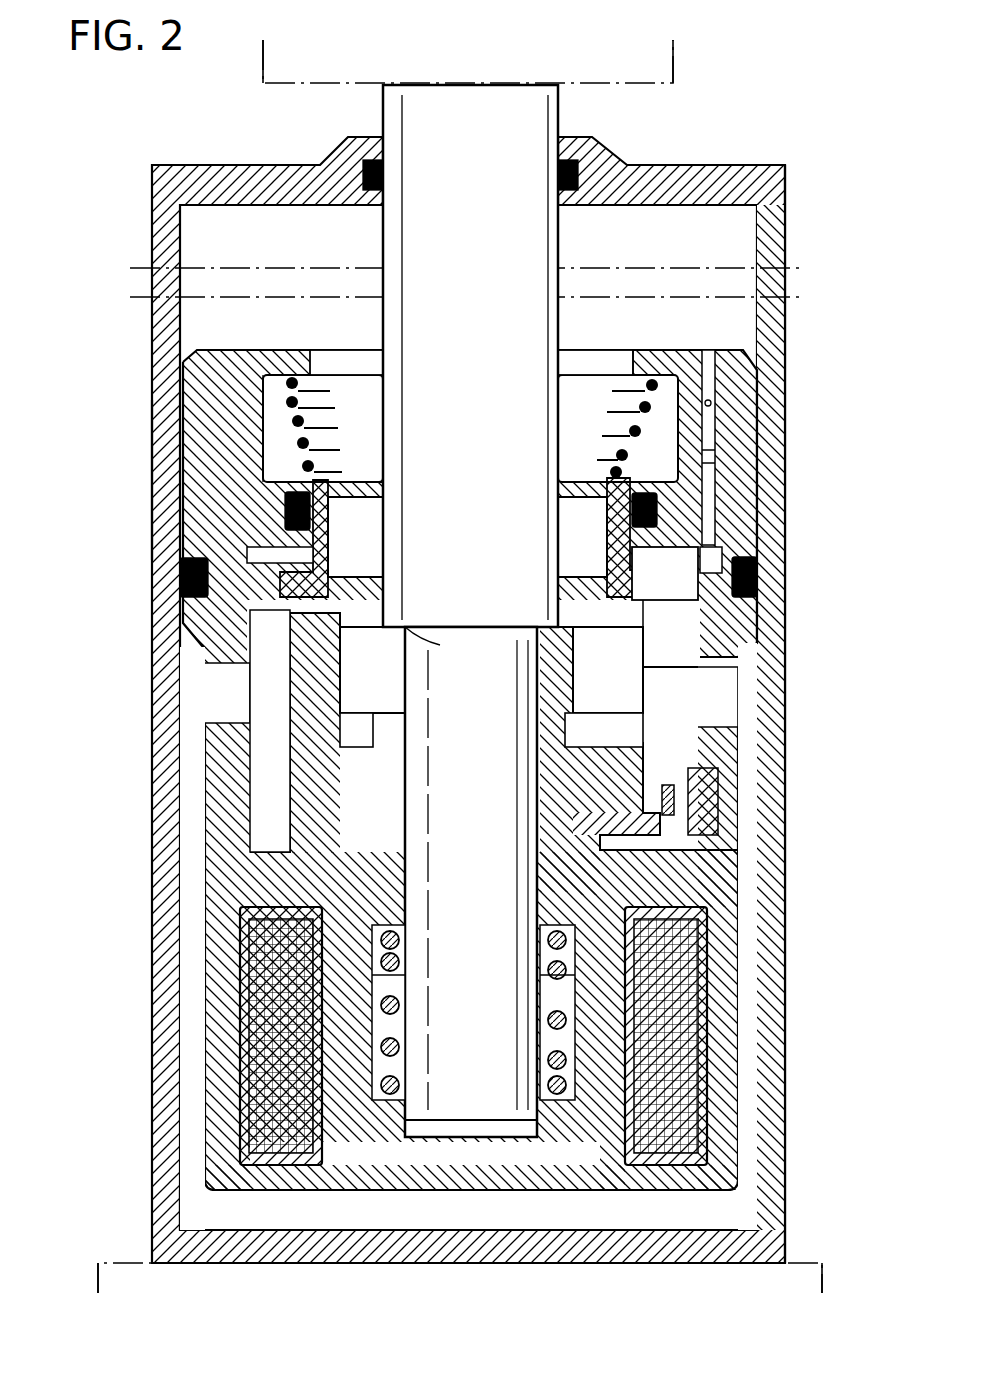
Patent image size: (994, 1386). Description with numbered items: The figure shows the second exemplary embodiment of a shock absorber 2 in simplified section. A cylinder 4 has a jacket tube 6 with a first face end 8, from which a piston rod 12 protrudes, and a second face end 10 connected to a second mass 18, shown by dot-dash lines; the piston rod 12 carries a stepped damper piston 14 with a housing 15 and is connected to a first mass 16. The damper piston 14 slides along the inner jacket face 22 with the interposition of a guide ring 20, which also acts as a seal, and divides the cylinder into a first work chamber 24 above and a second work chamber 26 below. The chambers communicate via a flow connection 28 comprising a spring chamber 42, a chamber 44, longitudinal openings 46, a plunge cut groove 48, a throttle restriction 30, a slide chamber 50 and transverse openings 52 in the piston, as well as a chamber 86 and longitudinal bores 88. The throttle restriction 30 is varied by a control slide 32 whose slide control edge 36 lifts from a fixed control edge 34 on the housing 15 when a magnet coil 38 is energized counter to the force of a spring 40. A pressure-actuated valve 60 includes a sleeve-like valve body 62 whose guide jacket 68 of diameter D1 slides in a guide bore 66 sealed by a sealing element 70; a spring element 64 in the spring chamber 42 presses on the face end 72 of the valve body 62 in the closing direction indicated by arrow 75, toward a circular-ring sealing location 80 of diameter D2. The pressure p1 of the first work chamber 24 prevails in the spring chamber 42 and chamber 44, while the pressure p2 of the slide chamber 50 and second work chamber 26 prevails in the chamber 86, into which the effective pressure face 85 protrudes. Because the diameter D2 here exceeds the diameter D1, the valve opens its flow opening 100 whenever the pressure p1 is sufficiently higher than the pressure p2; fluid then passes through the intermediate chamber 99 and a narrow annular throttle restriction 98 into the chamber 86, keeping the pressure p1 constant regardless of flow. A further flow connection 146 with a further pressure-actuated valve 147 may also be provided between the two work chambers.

The shock absorber 2 is at (768, 134).
The cylinder 4 is at (148, 411).
The jacket tube 6 is at (165, 470).
The first face end 8 is at (690, 178).
The second face end 10 is at (580, 1252).
The piston rod 12 is at (470, 356).
The damper piston 14 is at (200, 337).
The housing 15 is at (268, 350).
The first mass 16 is at (468, 59).
The second mass 18 is at (460, 1291).
The guide ring 20 is at (762, 576).
The inner jacket face 22 is at (203, 1198).
The first work chamber 24 is at (256, 243).
The second work chamber 26 is at (346, 1215).
The flow connection 28 is at (608, 352).
The throttle restriction 30 is at (660, 702).
The control slide 32 is at (292, 742).
The fixed control edge 34 is at (380, 740).
The slide control edge 36 is at (285, 722).
The magnet coil 38 is at (688, 1030).
The spring 40 is at (405, 1037).
The spring chamber 42 is at (323, 428).
The chamber 44 is at (400, 540).
The longitudinal openings 46 is at (363, 687).
The plunge cut groove 48 is at (408, 742).
The slide chamber 50 is at (268, 790).
The transverse openings 52 is at (225, 676).
The pressure-actuated valve 60 is at (545, 560).
The valve body 62 is at (355, 529).
The spring element 64 is at (288, 392).
The guide bore 66 is at (330, 470).
The guide jacket 68 is at (305, 556).
The sealing element 70 is at (660, 508).
The face end 72 is at (335, 490).
The arrow 75 is at (576, 460).
The sealing location 80 is at (280, 588).
The effective pressure face 85 is at (415, 632).
The chamber 86 is at (680, 598).
The longitudinal bores 88 is at (690, 622).
The throttle restriction 98 is at (325, 600).
The intermediate chamber 99 is at (315, 600).
The flow opening 100 is at (560, 603).
The further flow connection 146 is at (712, 404).
The further pressure-actuated valve 147 is at (716, 457).
The pressure p1 is at (360, 442).
The pressure p2 is at (625, 687).
The diameter D1 is at (608, 540).
The diameter D2 is at (600, 590).